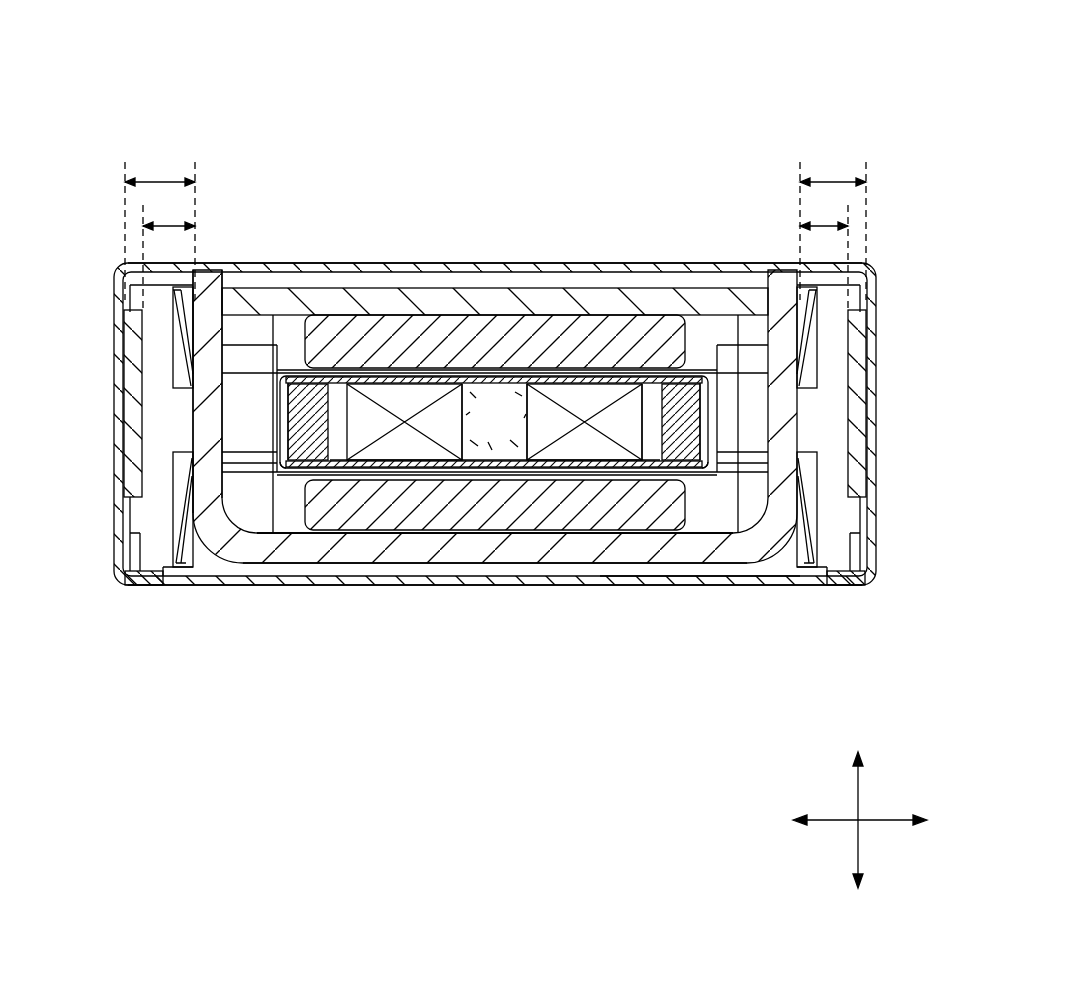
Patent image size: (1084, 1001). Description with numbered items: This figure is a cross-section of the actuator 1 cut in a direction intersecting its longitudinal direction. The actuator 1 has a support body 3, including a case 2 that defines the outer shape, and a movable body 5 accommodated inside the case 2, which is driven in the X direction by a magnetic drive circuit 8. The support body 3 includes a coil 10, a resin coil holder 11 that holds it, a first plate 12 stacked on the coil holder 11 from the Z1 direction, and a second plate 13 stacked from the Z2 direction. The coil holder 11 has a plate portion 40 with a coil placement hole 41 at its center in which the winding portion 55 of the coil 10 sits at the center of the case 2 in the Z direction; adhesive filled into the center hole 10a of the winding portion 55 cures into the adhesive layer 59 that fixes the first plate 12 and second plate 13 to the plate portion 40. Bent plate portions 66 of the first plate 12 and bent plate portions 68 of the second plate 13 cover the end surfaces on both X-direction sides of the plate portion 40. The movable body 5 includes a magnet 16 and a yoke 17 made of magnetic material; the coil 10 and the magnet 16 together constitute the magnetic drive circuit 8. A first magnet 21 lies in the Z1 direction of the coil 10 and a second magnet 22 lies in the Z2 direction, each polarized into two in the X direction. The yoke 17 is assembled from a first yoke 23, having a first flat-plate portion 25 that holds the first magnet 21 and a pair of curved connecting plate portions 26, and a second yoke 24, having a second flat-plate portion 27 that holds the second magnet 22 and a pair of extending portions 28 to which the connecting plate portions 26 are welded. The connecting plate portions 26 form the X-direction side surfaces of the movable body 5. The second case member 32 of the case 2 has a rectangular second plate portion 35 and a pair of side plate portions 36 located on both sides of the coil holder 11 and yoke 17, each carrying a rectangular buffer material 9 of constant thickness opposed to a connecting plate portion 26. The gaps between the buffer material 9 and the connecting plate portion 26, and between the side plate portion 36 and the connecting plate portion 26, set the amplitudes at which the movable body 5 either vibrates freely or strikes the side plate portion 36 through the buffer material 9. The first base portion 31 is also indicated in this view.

The actuator 1 is at (236, 108).
The case 2 is at (752, 676).
The support body 3 is at (189, 592).
The movable body 5 is at (311, 278).
The magnetic drive circuit 8 is at (548, 118).
The buffer material 9 is at (136, 400).
The coil 10 is at (474, 400).
The center hole 10a is at (517, 442).
The coil holder 11 is at (481, 533).
The first plate 12 is at (490, 472).
The second plate 13 is at (491, 375).
The magnet 16 is at (522, 158).
The yoke 17 is at (400, 158).
The first magnet 21 is at (578, 505).
The second magnet 22 is at (528, 330).
The first yoke 23 is at (468, 545).
The second yoke 24 is at (437, 293).
The first flat-plate portion 25 is at (413, 548).
The connecting plate portions 26 is at (203, 422).
The second flat-plate portion 27 is at (368, 300).
The extending portions 28 is at (208, 306).
The first base portion 31 is at (748, 588).
The second case member 32 is at (650, 588).
The second plate portion 35 is at (780, 276).
The side plate portions 36 is at (118, 505).
The plate portion 40 is at (305, 442).
The coil placement hole 41 is at (322, 440).
The winding portion 55 is at (623, 405).
The adhesive layer 59 is at (515, 422).
The bent plate portions 66 is at (290, 460).
The bent plate portions 68 is at (190, 342).